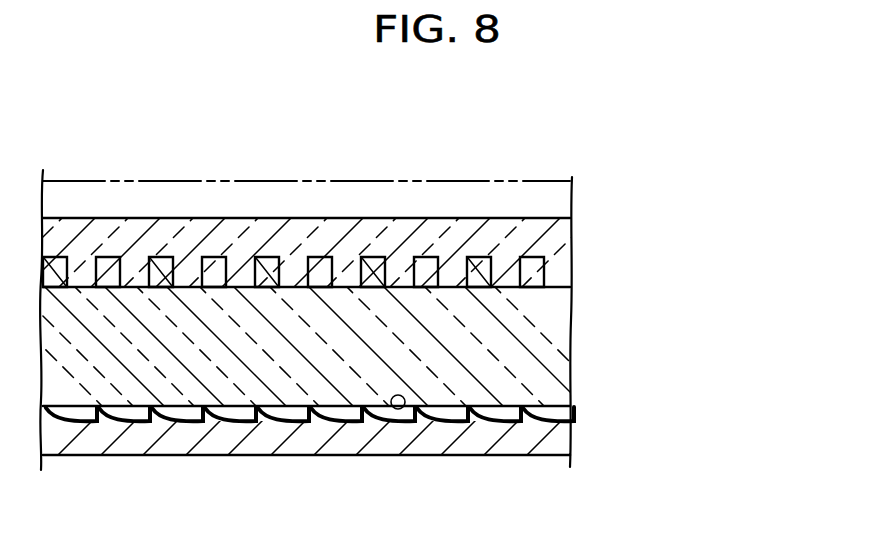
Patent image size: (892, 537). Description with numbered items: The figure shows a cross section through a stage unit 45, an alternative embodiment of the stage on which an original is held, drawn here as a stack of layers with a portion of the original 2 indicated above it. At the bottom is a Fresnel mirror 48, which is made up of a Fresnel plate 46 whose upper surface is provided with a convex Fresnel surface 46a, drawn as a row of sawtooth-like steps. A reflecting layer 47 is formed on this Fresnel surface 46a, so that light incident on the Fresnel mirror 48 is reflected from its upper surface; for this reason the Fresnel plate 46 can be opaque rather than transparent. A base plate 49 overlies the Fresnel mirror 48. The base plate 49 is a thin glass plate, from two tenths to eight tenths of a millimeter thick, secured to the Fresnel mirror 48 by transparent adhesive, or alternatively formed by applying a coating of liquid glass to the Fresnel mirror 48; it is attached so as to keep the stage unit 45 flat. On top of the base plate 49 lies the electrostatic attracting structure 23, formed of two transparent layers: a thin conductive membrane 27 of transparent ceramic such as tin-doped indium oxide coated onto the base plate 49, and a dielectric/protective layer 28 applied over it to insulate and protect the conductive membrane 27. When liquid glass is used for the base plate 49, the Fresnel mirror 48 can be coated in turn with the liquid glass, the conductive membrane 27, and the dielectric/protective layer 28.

The optical disk substrate 2 is at (387, 181).
The electrostatic attracting structure 23 is at (383, 251).
The conductive membrane 27 is at (537, 278).
The dielectric/protective layer 28 is at (558, 236).
The stage unit 45 is at (422, 359).
The Fresnel plate 46 is at (553, 447).
The convex Fresnel surface 46a is at (395, 409).
The reflecting layer 47 is at (563, 408).
The Fresnel mirror 48 is at (406, 455).
The base plate 49 is at (548, 340).